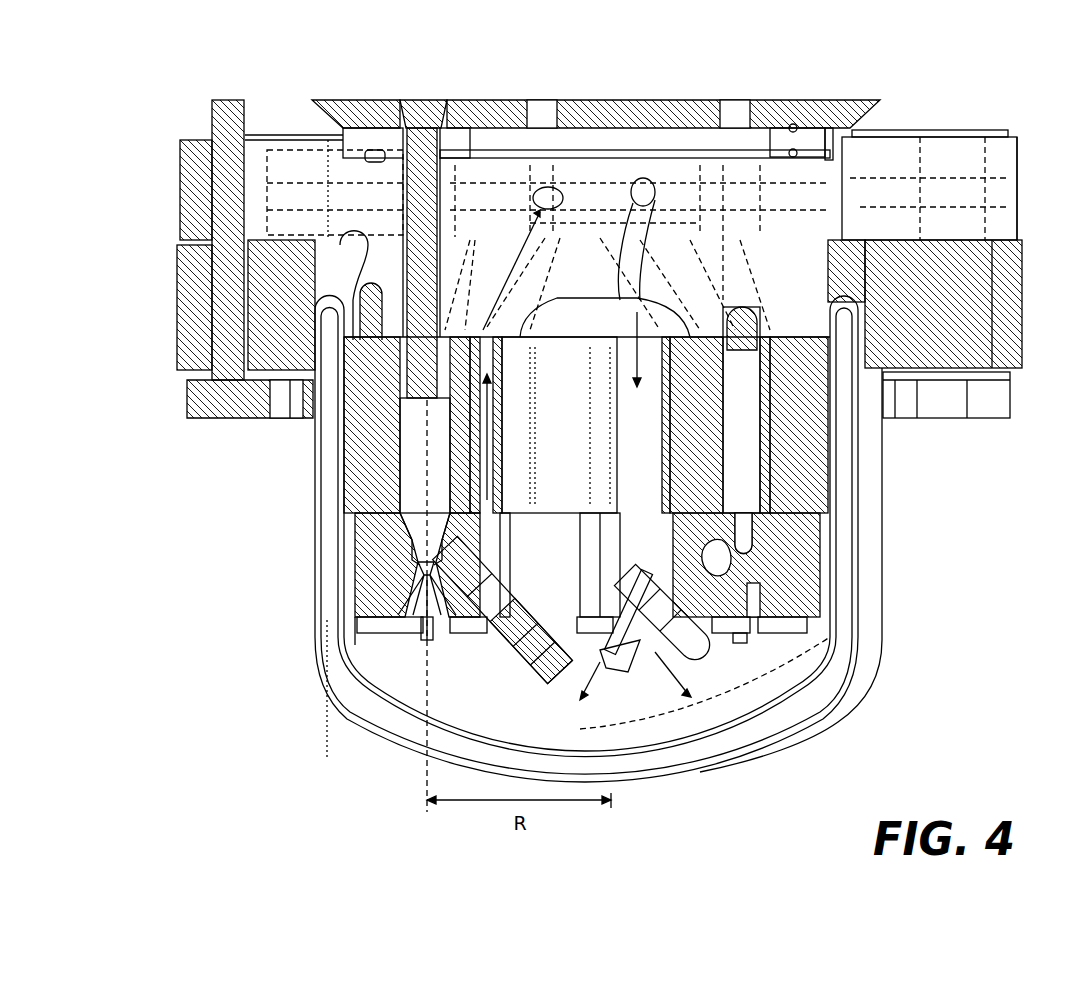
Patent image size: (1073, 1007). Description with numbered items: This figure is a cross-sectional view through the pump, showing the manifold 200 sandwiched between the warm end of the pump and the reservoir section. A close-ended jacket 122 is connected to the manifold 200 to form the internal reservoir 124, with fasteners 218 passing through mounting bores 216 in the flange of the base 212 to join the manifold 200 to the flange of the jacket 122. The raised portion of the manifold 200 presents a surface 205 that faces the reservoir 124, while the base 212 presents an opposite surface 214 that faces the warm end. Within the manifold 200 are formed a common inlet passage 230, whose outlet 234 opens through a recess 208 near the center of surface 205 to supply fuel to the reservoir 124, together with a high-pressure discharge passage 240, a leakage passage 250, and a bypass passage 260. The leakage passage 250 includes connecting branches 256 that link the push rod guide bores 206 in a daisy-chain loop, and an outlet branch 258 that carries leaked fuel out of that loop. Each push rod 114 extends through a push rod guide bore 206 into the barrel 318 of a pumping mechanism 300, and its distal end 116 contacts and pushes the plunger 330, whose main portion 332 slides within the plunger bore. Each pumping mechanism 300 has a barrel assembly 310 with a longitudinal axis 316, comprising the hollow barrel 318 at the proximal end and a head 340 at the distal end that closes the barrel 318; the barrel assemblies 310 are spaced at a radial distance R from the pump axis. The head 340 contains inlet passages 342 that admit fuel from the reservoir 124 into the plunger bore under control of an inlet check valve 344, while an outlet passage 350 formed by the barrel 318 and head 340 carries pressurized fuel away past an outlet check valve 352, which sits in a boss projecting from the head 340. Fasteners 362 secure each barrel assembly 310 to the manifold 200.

The push rod 114 is at (428, 100).
The distal end 116 is at (740, 352).
The jacket 122 is at (745, 777).
The reservoir 124 is at (548, 741).
The manifold 200 is at (1017, 135).
The surface 205 is at (508, 437).
The push rod guide bore 206 is at (555, 178).
The recess 208 is at (560, 333).
The base 212 is at (1017, 157).
The surface 214 is at (948, 120).
The mounting bore 216 is at (890, 128).
The fastener 218 is at (190, 432).
The inlet passage 230 is at (656, 185).
The outlet 234 is at (635, 362).
The high-pressure discharge passage 240 is at (611, 185).
The leakage passage 250 is at (779, 180).
The connecting branch 256 is at (458, 275).
The outlet branch 258 is at (830, 182).
The bypass passage 260 is at (304, 184).
The pumping mechanism 300 is at (438, 659).
The barrel assembly 310 is at (345, 497).
The longitudinal axis 316 is at (426, 775).
The barrel 318 is at (548, 441).
The plunger 330 is at (408, 471).
The main portion 332 is at (450, 337).
The head 340 is at (348, 585).
The inlet passage 342 is at (365, 640).
The inlet check valve 344 is at (440, 645).
The outlet passage 350 is at (510, 508).
The outlet check valve 352 is at (447, 570).
The fastener 362 is at (355, 645).